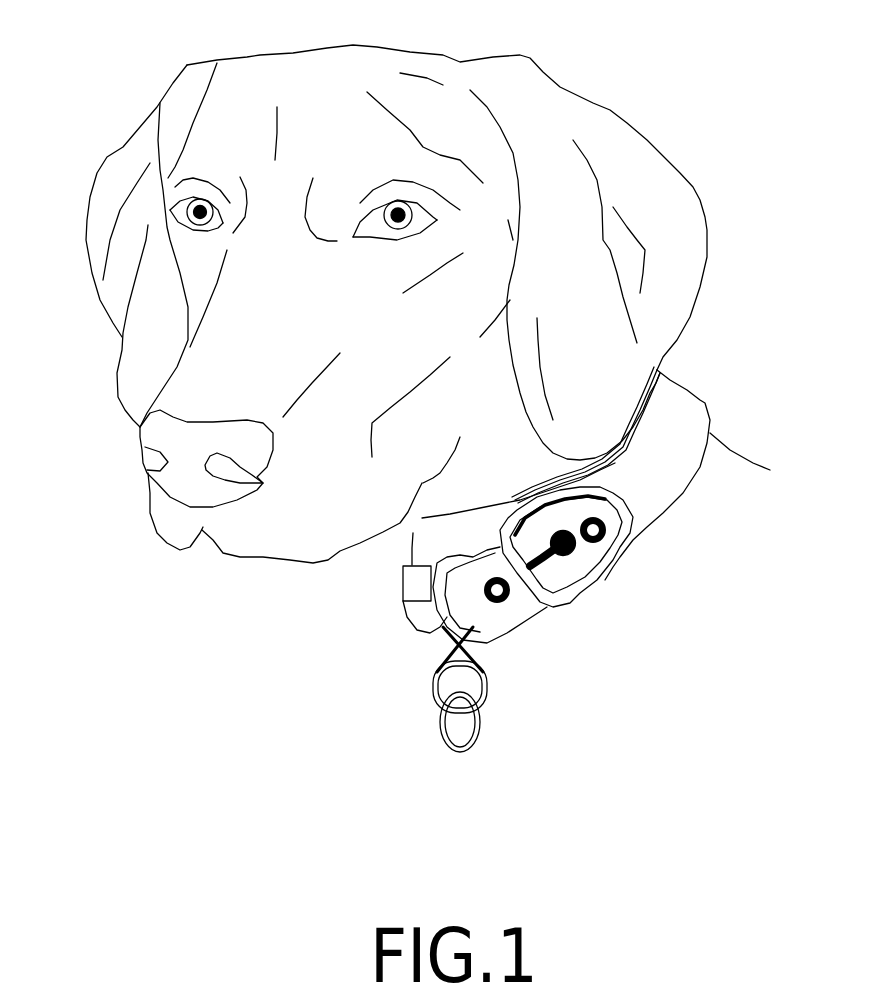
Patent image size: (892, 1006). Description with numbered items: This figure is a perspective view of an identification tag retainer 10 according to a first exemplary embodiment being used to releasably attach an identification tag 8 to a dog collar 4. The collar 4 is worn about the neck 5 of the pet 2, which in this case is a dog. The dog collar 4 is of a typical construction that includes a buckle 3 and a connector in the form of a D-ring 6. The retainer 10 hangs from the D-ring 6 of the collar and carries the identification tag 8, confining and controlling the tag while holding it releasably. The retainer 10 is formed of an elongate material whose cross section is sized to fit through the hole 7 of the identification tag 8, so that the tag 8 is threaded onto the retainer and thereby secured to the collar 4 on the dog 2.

The pet 2 is at (428, 281).
The buckle 3 is at (591, 548).
The dog collar 4 is at (608, 488).
The neck 5 is at (461, 532).
The D-ring 6 is at (394, 601).
The hole 7 is at (489, 713).
The identification tag 8 is at (474, 759).
The identification tag retainer 10 is at (405, 663).